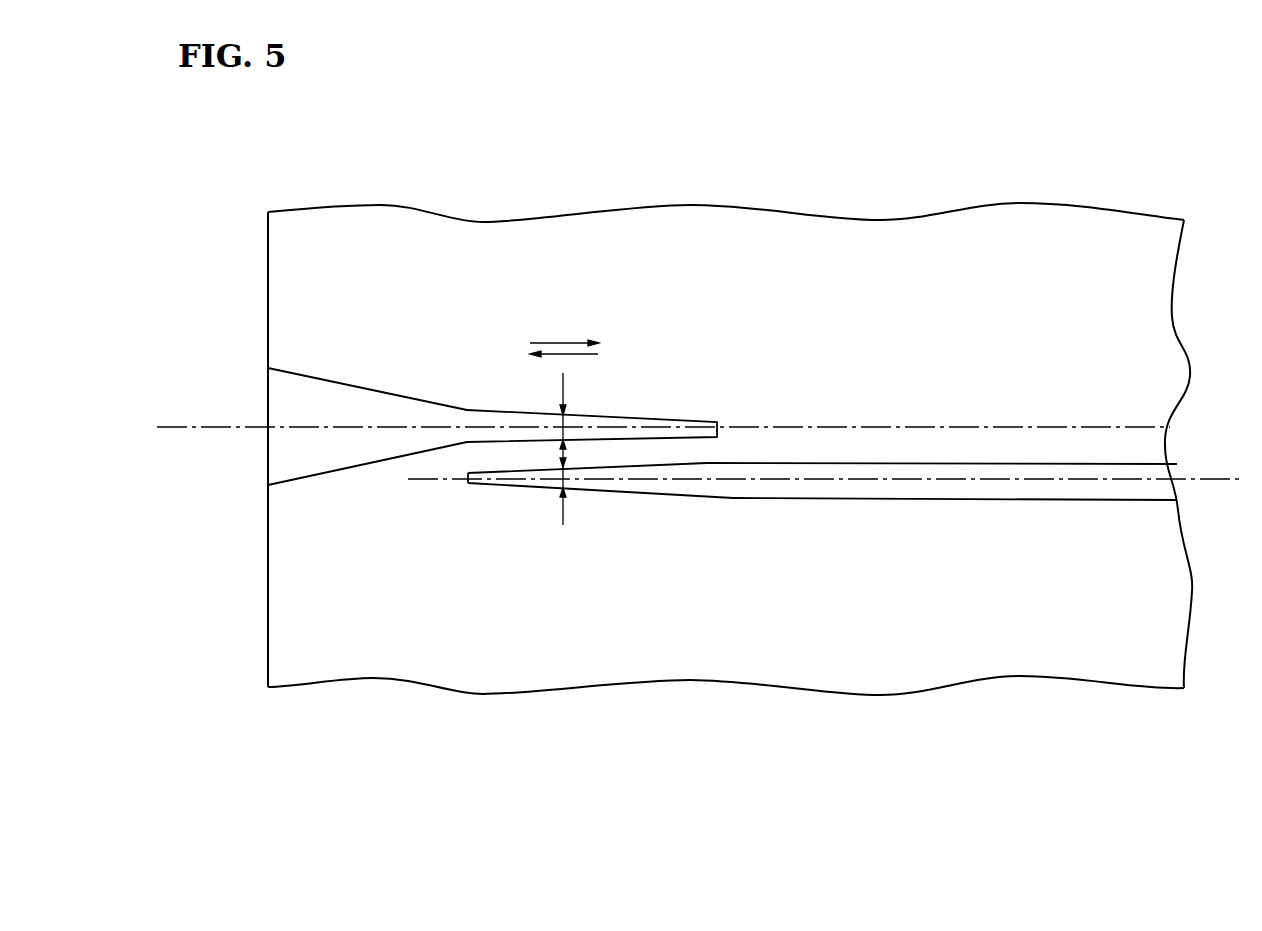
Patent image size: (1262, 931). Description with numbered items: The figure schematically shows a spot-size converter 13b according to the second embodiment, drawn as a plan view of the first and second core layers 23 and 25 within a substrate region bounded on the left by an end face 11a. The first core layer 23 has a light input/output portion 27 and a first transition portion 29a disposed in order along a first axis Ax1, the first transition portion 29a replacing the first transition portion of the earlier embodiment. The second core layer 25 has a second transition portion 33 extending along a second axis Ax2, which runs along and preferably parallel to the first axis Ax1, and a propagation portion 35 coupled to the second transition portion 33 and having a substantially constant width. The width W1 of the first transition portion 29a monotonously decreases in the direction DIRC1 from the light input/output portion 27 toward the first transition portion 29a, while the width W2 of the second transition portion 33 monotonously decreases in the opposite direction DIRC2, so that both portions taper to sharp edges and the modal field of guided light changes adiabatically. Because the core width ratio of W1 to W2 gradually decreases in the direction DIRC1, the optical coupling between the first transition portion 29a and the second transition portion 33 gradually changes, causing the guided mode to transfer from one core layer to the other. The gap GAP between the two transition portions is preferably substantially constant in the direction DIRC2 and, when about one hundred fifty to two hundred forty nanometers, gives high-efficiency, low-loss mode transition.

The end face of substrate 11a is at (268, 283).
The spot-size converter 13b is at (1130, 209).
The first core layer 23 is at (492, 360).
The light input/output portion 27 is at (268, 314).
The first transition portion 29a is at (592, 361).
The second core layer 25 is at (822, 544).
The second transition portion 33 is at (468, 544).
The propagation portion 35 is at (942, 524).
The direction DIRC1 is at (553, 344).
The direction DIRC2 is at (578, 355).
The width of the first transition portion W1 is at (563, 419).
The width of the second transition portion W2 is at (563, 488).
The gap GAP is at (568, 453).
The first axis Ax1 is at (172, 430).
The second axis Ax2 is at (1219, 486).